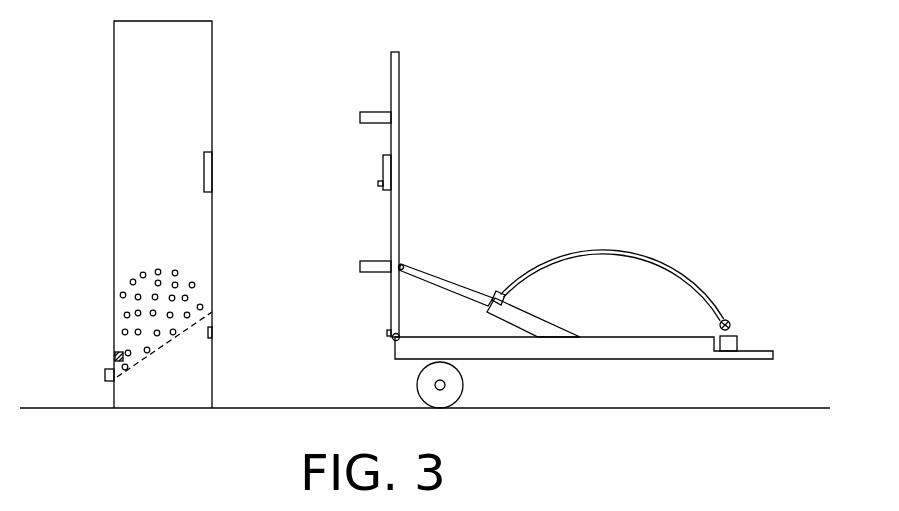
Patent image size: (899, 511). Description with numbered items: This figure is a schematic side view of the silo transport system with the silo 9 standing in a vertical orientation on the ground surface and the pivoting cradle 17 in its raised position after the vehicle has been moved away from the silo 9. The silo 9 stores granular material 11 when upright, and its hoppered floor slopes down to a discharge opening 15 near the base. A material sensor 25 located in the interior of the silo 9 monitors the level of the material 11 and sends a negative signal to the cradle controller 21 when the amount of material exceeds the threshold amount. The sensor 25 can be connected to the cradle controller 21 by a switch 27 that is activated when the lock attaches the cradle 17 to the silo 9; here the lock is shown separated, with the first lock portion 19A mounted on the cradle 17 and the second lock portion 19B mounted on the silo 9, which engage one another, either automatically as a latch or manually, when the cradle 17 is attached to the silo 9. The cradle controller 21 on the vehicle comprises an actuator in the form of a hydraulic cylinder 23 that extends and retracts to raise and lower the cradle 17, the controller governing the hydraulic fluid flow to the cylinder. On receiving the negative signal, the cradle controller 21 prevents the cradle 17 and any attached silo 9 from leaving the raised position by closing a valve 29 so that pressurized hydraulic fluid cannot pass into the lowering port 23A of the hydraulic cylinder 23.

The silo 9 is at (113, 157).
The material 11 is at (135, 306).
The discharge opening 15 is at (105, 375).
The pivoting cradle 17 is at (399, 133).
The first lock portion 19A is at (383, 168).
The second lock portion 19B is at (213, 166).
The cradle controller 21 is at (740, 341).
The hydraulic cylinder 23 is at (488, 309).
The lowering port 23A is at (497, 296).
The material sensor 25 is at (115, 356).
The switch 27 is at (379, 184).
The valve 29 is at (729, 322).